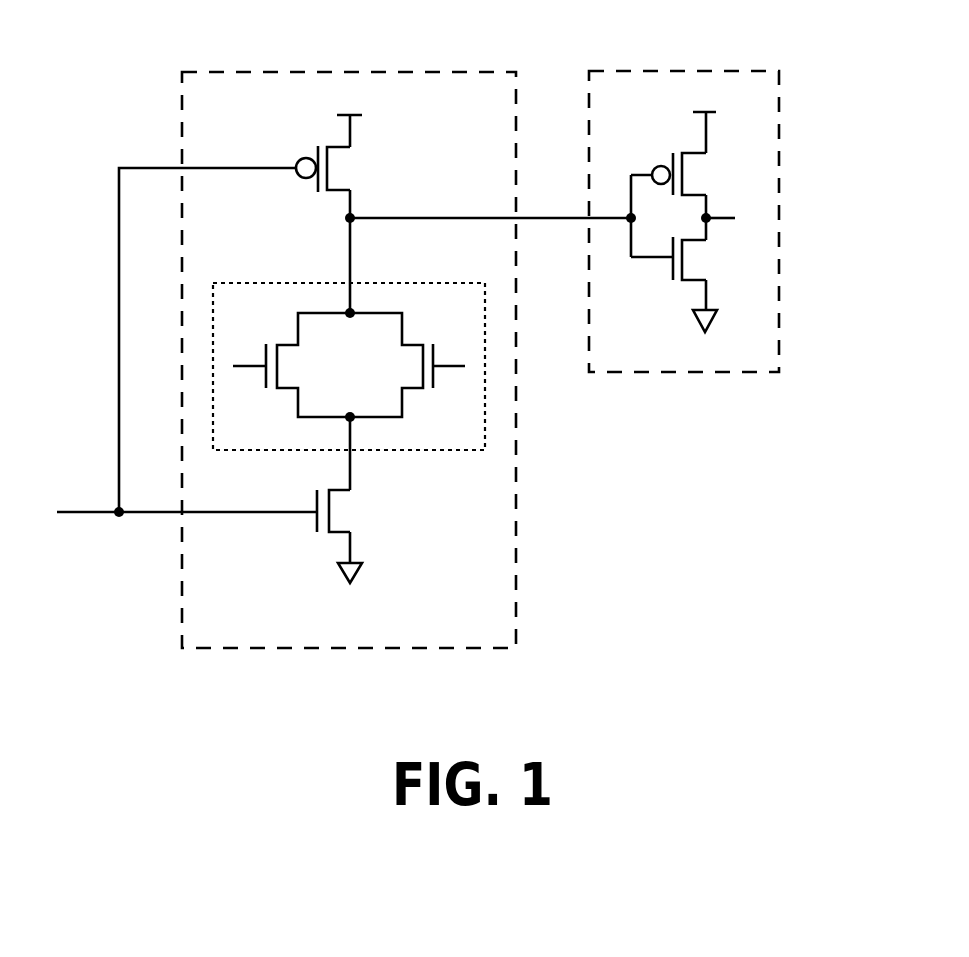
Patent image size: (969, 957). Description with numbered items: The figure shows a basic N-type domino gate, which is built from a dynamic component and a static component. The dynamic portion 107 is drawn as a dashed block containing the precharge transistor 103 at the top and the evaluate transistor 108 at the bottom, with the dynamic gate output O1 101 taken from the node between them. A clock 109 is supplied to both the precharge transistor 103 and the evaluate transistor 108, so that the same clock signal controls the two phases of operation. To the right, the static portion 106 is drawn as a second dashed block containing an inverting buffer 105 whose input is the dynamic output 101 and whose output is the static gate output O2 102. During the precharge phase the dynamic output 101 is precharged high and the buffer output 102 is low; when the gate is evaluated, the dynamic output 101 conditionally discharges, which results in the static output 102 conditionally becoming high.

The output O1 of the dynamic gate 101 is at (418, 213).
The output O2 of the static gate 102 is at (735, 216).
The precharge transistor 103 is at (239, 163).
The inverting buffer 105 is at (730, 303).
The static portion 106 is at (683, 70).
The dynamic portion 107 is at (378, 72).
The evaluate transistor 108 is at (250, 520).
The clock 109 is at (65, 520).